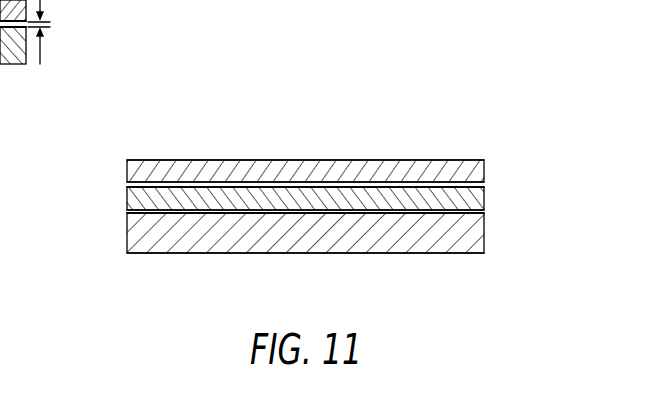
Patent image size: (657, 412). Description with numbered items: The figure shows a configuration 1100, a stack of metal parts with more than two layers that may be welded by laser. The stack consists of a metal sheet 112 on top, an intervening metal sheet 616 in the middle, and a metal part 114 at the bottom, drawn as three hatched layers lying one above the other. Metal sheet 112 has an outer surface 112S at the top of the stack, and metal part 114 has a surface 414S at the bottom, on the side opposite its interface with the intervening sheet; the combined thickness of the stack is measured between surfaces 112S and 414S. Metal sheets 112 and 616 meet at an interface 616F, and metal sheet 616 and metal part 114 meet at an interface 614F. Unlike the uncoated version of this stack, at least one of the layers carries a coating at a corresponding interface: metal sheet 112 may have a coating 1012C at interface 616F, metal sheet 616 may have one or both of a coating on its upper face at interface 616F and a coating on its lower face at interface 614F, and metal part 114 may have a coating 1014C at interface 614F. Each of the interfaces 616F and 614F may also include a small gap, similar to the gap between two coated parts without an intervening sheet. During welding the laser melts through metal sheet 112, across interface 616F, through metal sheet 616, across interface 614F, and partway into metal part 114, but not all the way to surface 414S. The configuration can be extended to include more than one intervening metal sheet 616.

The configuration 1100 is at (382, 61).
The metal sheet 112 is at (127, 167).
The surface 112S is at (147, 155).
The intervening metal sheet 616 is at (127, 197).
The interface 616F is at (120, 183).
The interface 614F is at (120, 211).
The metal part 114 is at (127, 243).
The surface 414S is at (178, 260).
The coating 1012C is at (265, 181).
The coating 1014C is at (422, 214).